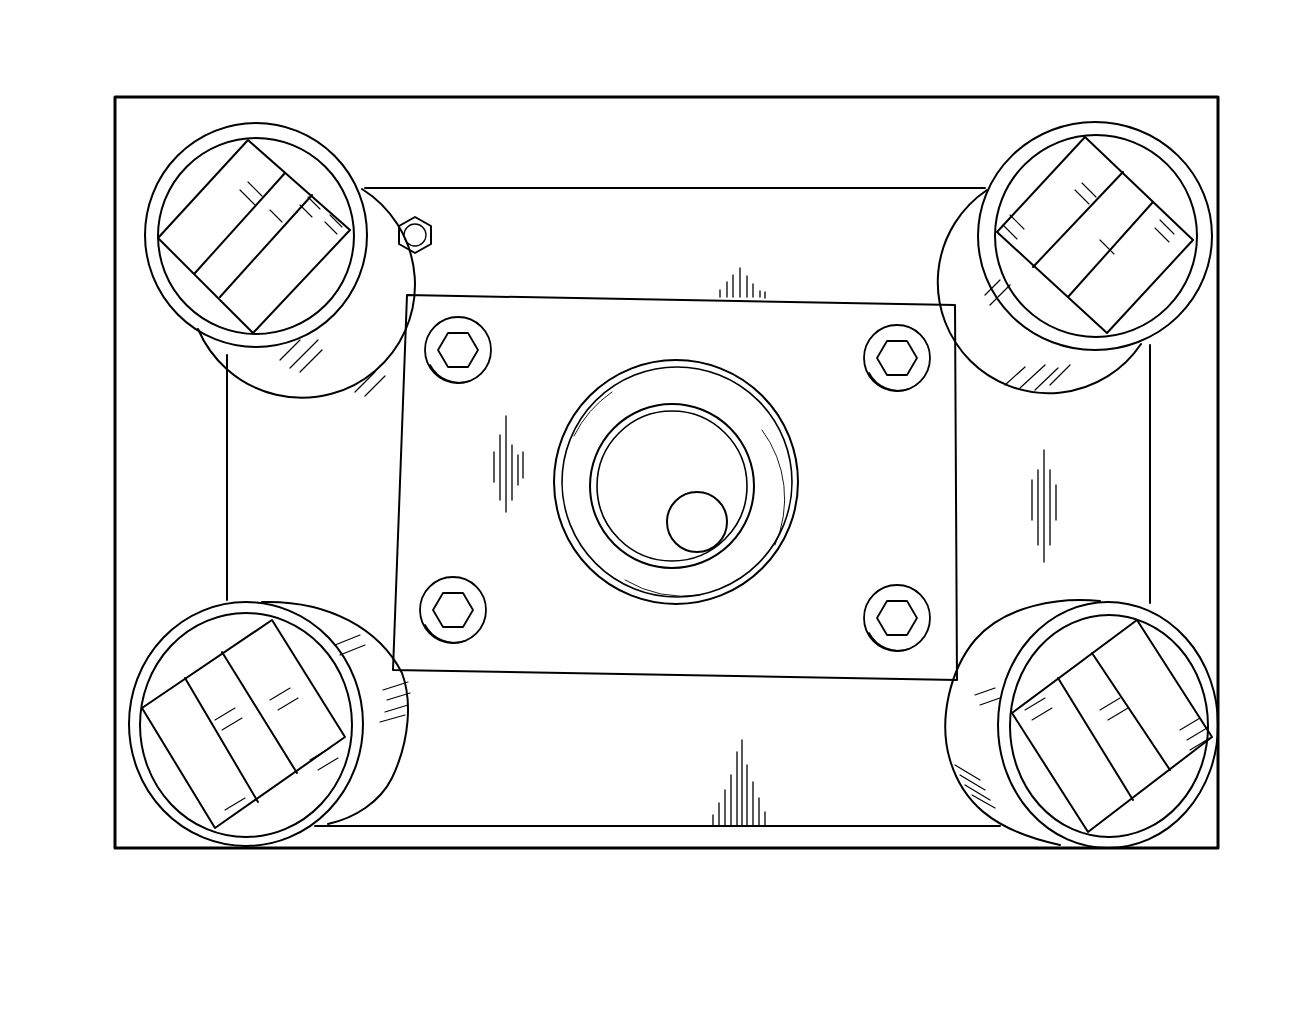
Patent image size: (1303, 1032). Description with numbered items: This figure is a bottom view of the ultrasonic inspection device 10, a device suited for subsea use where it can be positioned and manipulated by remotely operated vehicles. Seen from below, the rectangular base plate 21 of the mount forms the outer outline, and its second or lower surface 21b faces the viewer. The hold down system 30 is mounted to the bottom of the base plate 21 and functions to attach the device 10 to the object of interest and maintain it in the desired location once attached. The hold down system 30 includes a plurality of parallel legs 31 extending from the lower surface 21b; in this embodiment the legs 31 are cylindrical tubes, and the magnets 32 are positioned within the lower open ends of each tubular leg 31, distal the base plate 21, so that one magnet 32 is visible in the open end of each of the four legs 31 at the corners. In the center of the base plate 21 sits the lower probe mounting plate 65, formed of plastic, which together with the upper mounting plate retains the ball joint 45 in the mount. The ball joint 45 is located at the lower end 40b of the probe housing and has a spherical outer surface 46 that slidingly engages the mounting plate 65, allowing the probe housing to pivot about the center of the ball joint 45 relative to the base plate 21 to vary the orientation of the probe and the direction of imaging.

The ultrasonic inspection device 10 is at (122, 66).
The hold down system 30 is at (1142, 90).
The legs 31 is at (197, 155).
The magnets 32 is at (180, 226).
The base plate 21 is at (655, 200).
The lower surface 21b is at (590, 243).
The lower probe mounting plate 65 is at (902, 500).
The ball joint 45 is at (700, 402).
The lower end 40b is at (753, 455).
The spherical outer surface 46 is at (780, 527).